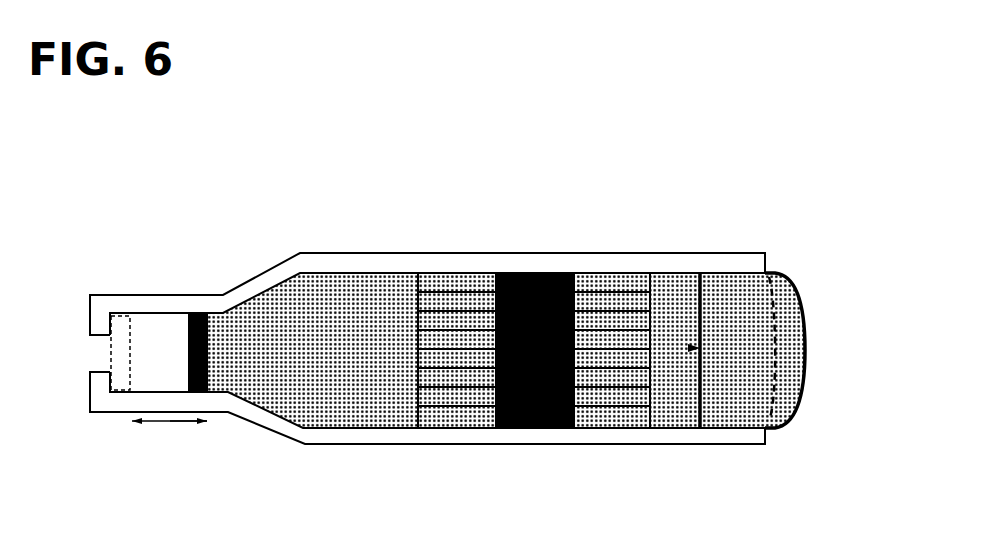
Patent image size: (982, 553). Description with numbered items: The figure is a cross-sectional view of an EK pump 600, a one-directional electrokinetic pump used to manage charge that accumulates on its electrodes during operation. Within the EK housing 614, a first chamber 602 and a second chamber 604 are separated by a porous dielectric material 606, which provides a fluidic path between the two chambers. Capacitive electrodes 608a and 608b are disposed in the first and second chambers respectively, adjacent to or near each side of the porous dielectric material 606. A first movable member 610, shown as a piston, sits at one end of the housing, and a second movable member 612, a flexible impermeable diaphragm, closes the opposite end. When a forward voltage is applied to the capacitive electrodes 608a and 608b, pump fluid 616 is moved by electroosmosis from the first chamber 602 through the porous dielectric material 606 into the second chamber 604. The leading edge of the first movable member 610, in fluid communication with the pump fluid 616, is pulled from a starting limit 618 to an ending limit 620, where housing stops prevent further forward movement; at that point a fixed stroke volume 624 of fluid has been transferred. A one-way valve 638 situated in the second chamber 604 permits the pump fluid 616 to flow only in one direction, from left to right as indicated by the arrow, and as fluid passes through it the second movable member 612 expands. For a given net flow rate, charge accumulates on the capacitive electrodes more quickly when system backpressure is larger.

The EK pump 600 is at (745, 143).
The first chamber 602 is at (358, 288).
The second chamber 604 is at (741, 282).
The porous dielectric material 606 is at (532, 282).
The capacitive electrode 608a is at (455, 405).
The capacitive electrode 608b is at (613, 405).
The first movable member 610 is at (205, 318).
The second movable member 612 is at (795, 278).
The EK housing 614 is at (720, 432).
The pump fluid 616 is at (332, 410).
The starting limit 618 is at (140, 425).
The ending limit 620 is at (200, 425).
The fixed stroke volume 624 is at (793, 347).
The one-way valve 638 is at (698, 283).